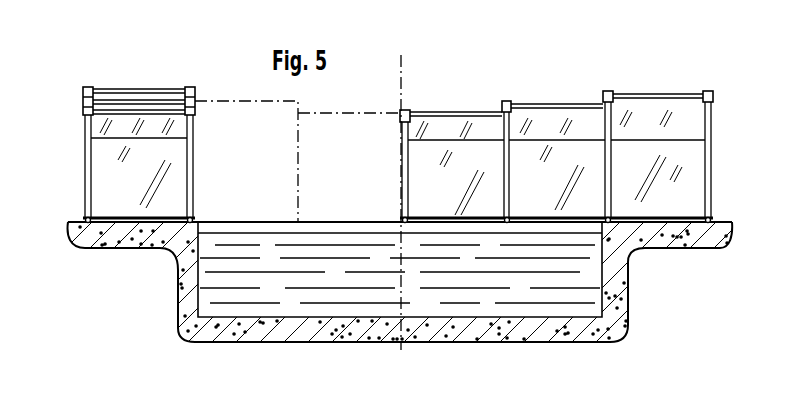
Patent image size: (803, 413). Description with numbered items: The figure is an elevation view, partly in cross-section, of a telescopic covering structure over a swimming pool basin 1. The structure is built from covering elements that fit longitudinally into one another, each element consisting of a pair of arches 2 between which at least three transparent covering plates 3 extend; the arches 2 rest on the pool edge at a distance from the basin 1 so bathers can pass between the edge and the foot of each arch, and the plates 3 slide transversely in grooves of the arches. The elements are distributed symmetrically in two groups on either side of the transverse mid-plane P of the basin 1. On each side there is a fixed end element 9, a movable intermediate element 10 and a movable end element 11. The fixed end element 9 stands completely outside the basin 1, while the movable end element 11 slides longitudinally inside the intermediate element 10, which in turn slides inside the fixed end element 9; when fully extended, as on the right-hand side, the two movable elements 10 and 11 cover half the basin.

The swimming pool basin 1 is at (600, 280).
The arches 2 is at (702, 178).
The transparent covering plates 3 is at (96, 175).
The fixed end element 9 is at (88, 87).
The movable intermediate element 10 is at (83, 101).
The movable end element 11 is at (83, 110).
The transverse mid-plane P is at (400, 72).